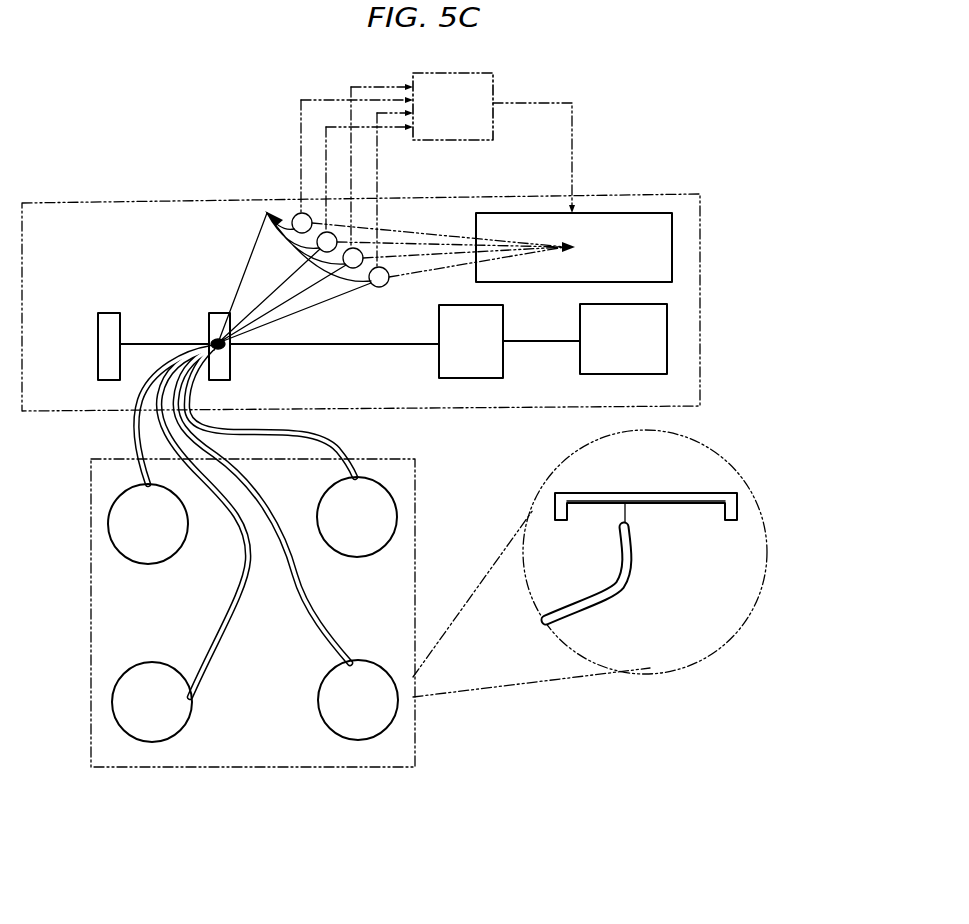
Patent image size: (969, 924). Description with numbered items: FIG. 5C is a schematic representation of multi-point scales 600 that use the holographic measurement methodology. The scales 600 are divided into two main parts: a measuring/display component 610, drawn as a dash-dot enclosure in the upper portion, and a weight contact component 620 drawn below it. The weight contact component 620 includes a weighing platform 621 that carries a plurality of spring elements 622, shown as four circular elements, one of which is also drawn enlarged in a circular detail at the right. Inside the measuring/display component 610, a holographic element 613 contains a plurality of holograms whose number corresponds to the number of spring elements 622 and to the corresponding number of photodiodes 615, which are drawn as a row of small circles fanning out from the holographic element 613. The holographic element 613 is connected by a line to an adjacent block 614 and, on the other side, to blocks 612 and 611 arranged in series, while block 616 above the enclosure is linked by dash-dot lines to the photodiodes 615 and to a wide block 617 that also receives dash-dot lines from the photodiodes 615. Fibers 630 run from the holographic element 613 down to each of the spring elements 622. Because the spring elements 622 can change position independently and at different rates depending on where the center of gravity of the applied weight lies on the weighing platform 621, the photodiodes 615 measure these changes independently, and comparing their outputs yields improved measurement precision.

The multi-point scales 600 is at (768, 312).
The measuring/display component 610 is at (720, 218).
The power supply 611 is at (584, 320).
The lamp driver 612 is at (444, 322).
The holographic element 613 is at (218, 311).
The reflector 614 is at (107, 311).
The photodiodes 615 is at (303, 274).
The controller 616 is at (495, 86).
The sensor unit 617 is at (635, 214).
The weight contact component 620 is at (55, 625).
The weighing platform 621 is at (90, 585).
The spring elements 622 is at (107, 521).
The optical fiber cable 630 is at (130, 443).